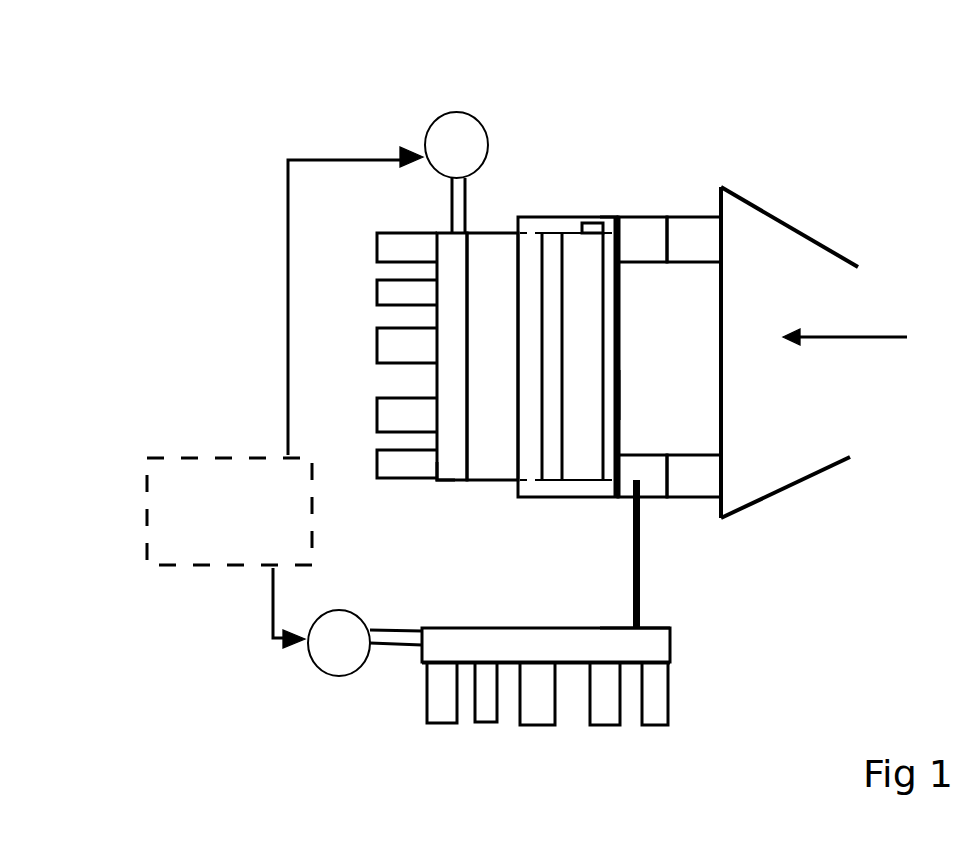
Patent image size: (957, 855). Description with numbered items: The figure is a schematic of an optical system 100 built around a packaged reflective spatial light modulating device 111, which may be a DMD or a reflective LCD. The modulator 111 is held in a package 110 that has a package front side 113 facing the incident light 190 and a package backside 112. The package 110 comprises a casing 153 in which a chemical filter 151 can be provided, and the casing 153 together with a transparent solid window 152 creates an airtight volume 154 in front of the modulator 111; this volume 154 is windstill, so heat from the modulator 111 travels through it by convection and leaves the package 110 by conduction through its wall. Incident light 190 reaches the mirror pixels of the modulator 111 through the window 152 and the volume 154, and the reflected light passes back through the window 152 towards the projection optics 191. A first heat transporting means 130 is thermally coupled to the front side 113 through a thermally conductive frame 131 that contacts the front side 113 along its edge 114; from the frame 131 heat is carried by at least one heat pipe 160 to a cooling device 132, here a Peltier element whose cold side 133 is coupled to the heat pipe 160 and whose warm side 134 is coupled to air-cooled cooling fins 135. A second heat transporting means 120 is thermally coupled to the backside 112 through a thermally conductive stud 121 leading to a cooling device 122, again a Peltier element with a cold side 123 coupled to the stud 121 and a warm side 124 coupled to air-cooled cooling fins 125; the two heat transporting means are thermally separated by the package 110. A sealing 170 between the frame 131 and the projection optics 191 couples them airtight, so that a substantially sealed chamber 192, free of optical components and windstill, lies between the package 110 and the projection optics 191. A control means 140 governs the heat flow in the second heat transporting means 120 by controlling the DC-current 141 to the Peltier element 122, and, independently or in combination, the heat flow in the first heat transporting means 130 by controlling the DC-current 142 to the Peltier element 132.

The optical system 100 is at (202, 262).
The package 110 is at (579, 212).
The reflective spatial light modulating device 111 is at (550, 453).
The package backside 112 is at (535, 250).
The package front side 113 is at (628, 393).
The edge of the package front side 114 is at (618, 210).
The second heat transporting means 120 is at (490, 325).
The thermally conductive stud 121 is at (488, 452).
The cooling device 122 is at (452, 380).
The cold side 123 is at (462, 414).
The warm side 124 is at (442, 464).
The air-cooled cooling fins 125 is at (403, 465).
The first heat transporting means 130 is at (625, 668).
The thermally conductive frame 131 is at (650, 233).
The cooling device 132 is at (652, 642).
The cold side 133 is at (659, 623).
The warm side 134 is at (518, 665).
The air-cooled cooling fins 135 is at (447, 697).
The control means 140 is at (229, 511).
The DC-current 141 is at (287, 408).
The DC-current 142 is at (272, 630).
The chemical filter 151 is at (592, 223).
The window 152 is at (610, 350).
The casing 153 is at (565, 485).
The airtight volume 154 is at (578, 272).
The heat pipe 160 is at (638, 548).
The sealing 170 is at (688, 233).
The incident light 190 is at (845, 321).
The projection optics 191 is at (797, 263).
The substantially sealed chamber 192 is at (703, 427).